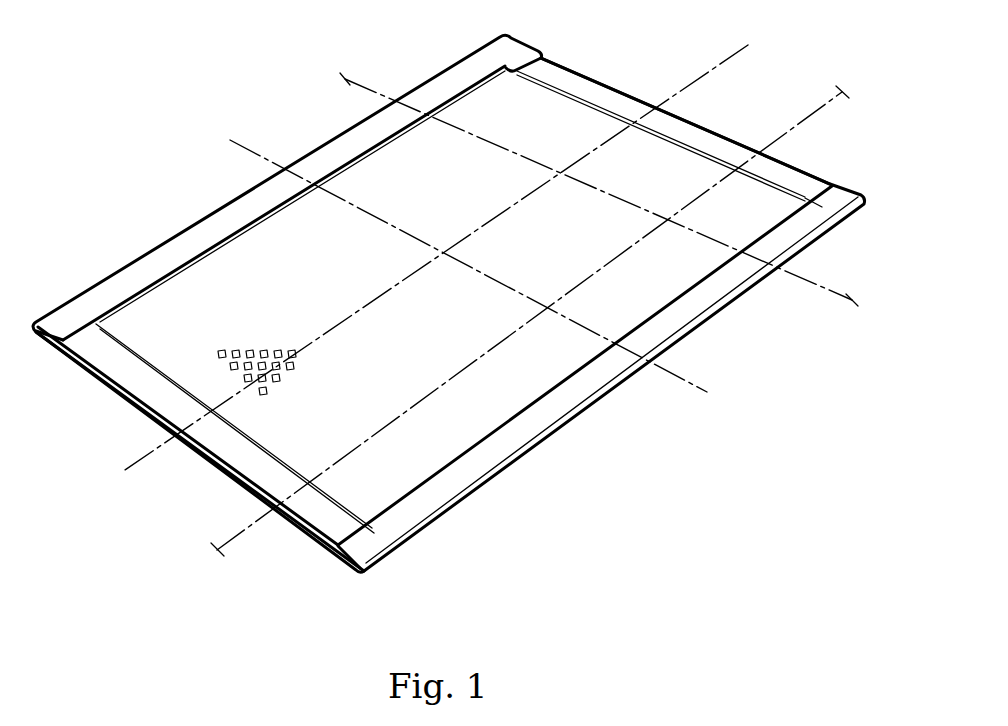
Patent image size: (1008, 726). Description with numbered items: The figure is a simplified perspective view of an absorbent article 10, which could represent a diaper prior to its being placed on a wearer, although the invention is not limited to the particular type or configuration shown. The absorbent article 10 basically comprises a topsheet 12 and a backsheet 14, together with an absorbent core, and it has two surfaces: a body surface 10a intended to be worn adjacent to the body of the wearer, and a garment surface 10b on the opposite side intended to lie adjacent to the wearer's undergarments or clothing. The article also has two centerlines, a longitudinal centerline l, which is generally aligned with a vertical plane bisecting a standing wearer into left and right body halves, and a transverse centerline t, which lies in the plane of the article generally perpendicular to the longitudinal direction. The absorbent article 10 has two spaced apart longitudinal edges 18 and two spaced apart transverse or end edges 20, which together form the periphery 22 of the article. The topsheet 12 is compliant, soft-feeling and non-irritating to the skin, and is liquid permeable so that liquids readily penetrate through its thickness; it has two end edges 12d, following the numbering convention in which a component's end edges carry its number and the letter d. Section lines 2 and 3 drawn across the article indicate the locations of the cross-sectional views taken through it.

The absorbent article 10 is at (205, 196).
The body surface 10a is at (523, 363).
The garment surface 10b is at (472, 410).
The topsheet 12 is at (363, 193).
The end edges 12d is at (712, 153).
The backsheet 14 is at (375, 132).
The longitudinal edges 18 is at (165, 243).
The transverse or end edges 20 is at (627, 93).
The periphery 22 is at (465, 497).
The transverse centerline t is at (658, 370).
The longitudinal centerline l is at (435, 242).
The section line 2- 2 is at (350, 77).
The section line 3- 3 is at (843, 92).